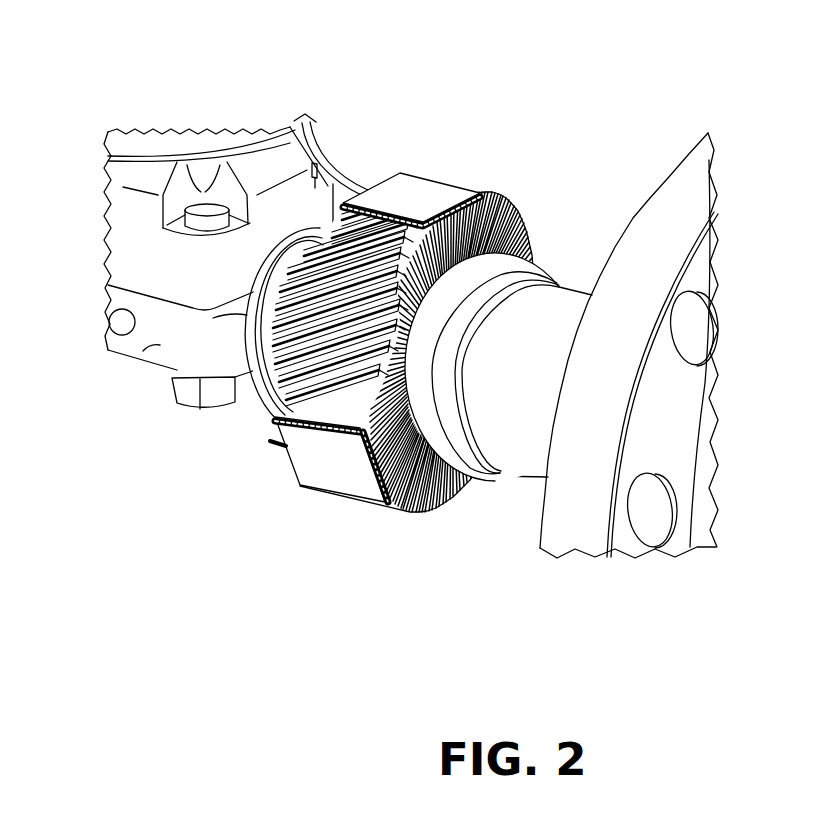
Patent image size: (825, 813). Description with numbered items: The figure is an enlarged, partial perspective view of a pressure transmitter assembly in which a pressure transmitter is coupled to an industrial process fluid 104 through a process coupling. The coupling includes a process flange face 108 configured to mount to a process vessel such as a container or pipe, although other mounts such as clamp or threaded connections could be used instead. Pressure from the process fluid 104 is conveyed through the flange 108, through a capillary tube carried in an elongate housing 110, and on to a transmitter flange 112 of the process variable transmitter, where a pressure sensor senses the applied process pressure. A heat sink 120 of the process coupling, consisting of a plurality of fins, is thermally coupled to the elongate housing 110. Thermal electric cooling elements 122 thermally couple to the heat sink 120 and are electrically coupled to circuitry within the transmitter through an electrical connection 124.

The industrial process fluid 104 is at (788, 470).
The process flange face 108 is at (570, 520).
The elongate housing 110 is at (560, 313).
The transmitter flange 112 is at (160, 345).
The heat sink 120 is at (513, 213).
The thermal electric cooling elements 122 is at (422, 196).
The electrical connection 124 is at (329, 152).